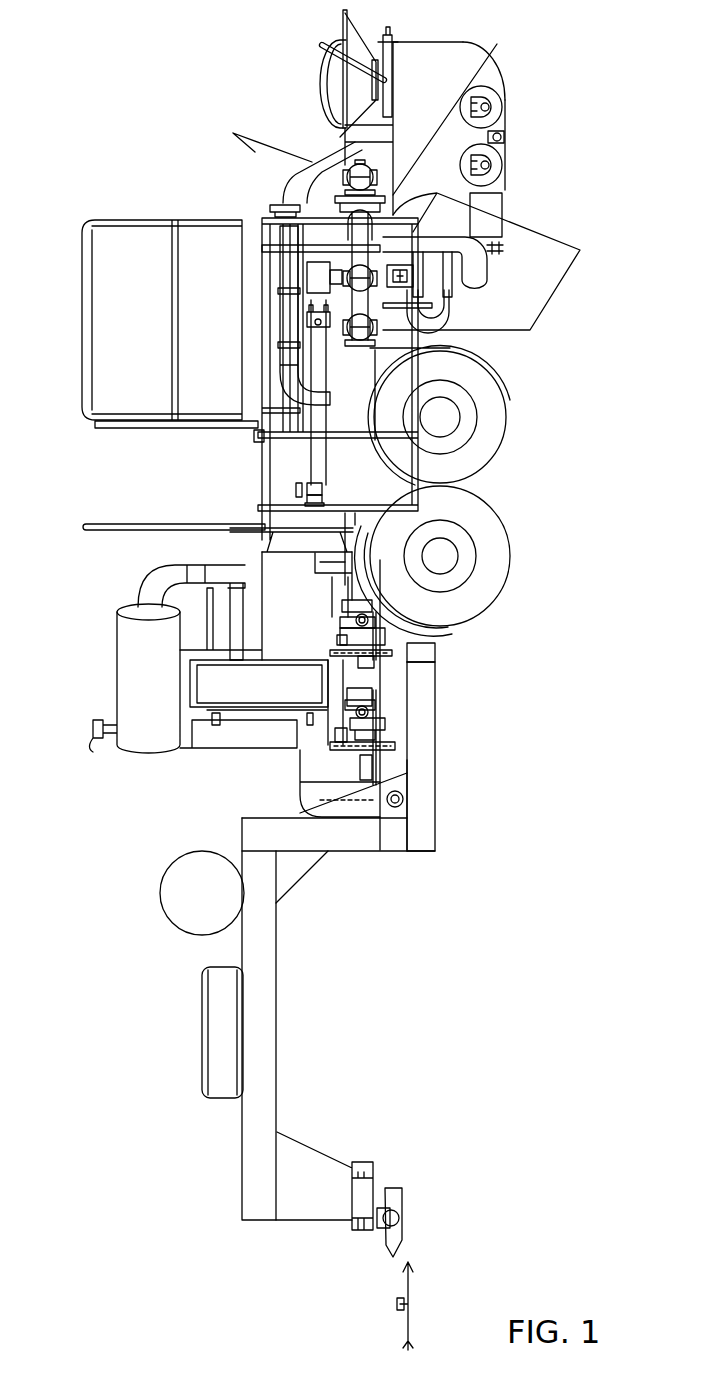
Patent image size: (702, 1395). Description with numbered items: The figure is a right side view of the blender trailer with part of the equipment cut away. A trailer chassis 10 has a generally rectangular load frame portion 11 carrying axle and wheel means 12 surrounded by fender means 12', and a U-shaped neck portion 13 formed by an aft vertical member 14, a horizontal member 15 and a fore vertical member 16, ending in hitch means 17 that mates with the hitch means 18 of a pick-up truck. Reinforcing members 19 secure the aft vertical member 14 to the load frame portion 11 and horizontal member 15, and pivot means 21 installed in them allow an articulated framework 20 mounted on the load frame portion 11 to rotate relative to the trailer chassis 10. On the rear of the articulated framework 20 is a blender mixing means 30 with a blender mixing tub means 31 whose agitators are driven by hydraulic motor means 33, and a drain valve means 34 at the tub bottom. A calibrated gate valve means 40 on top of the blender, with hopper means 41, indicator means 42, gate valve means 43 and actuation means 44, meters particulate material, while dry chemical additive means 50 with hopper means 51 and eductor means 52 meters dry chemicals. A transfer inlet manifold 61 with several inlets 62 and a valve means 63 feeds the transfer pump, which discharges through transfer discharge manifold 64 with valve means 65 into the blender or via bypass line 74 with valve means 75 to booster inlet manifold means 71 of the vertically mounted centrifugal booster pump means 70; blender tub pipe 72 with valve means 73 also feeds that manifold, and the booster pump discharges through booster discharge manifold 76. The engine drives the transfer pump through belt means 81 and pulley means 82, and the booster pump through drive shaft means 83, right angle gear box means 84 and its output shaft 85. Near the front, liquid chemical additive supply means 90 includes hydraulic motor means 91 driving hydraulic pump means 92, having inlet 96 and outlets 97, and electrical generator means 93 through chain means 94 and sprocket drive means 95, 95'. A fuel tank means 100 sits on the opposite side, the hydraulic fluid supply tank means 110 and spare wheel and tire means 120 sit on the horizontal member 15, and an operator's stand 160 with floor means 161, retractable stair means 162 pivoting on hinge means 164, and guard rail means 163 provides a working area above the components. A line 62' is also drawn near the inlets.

The trailer chassis 10 is at (425, 813).
The load frame portion 11 is at (425, 802).
The wheel means 12 is at (440, 488).
The fender means 12' is at (442, 552).
The U-shaped neck portion 13 is at (263, 1057).
The aft vertical member 14 is at (335, 840).
The horizontal member 15 is at (262, 1023).
The fore vertical member 16 is at (288, 1153).
The hitch means 17 is at (392, 1217).
The hitch means of the truck 18 is at (412, 1305).
The reinforcing members 19 is at (300, 903).
The articulated framework 20 is at (393, 713).
The pivot means 21 is at (400, 807).
The blender mixing means 30 is at (430, 55).
The blender mixing tub means 31 is at (460, 58).
The hydraulic motor means 33 is at (512, 168).
The drain valve means 34 is at (504, 137).
The calibrated gate valve means 40 is at (389, 42).
The hopper means 41 is at (355, 80).
The indicator means 42 is at (340, 42).
The gate valve means 43 is at (378, 62).
The actuation means 44 is at (321, 46).
The dry chemical additive means 50 is at (318, 158).
The hopper means 51 is at (263, 131).
The eductor means 52 is at (338, 172).
The transfer inlet manifold 61 is at (450, 350).
The inlets 62 is at (495, 261).
The compartment wall 62' is at (460, 108).
The valve means 63 is at (370, 207).
The transfer discharge manifold 64 is at (290, 320).
The valve means 65 is at (285, 213).
The centrifugal booster pump means 70 is at (452, 278).
The booster inlet manifold means 71 is at (488, 276).
The blender tub pipe 72 is at (492, 205).
The valve means 73 is at (500, 248).
The bypass line 74 is at (458, 243).
The valve means 75 is at (277, 242).
The booster discharge manifold 76 is at (403, 308).
The belt means 81 is at (321, 501).
The pulley means 82 is at (317, 500).
The drive shaft means 83 is at (315, 353).
The right angle gear box means 84 is at (313, 277).
The output shaft 85 is at (337, 277).
The liquid chemical additive supply means 90 is at (346, 724).
The hydraulic motor means 91 is at (338, 737).
The hydraulic pump means 92 is at (373, 729).
The electrical generator means 93 is at (368, 768).
The chain means 94 is at (350, 749).
The sprocket drive means 95 is at (319, 682).
The lower sprocket drive means 95' is at (402, 704).
The inlet 96 is at (374, 708).
The outlets 97 is at (362, 702).
The fuel tank means 100 is at (320, 790).
The hydraulic fluid supply tank means 110 is at (182, 903).
The spare wheel and tire means 120 is at (215, 1042).
The operator's stand 160 is at (252, 386).
The floor means 161 is at (258, 430).
The retractable stair means 162 is at (280, 510).
The guard rail means 163 is at (115, 524).
The hinge means 164 is at (258, 438).